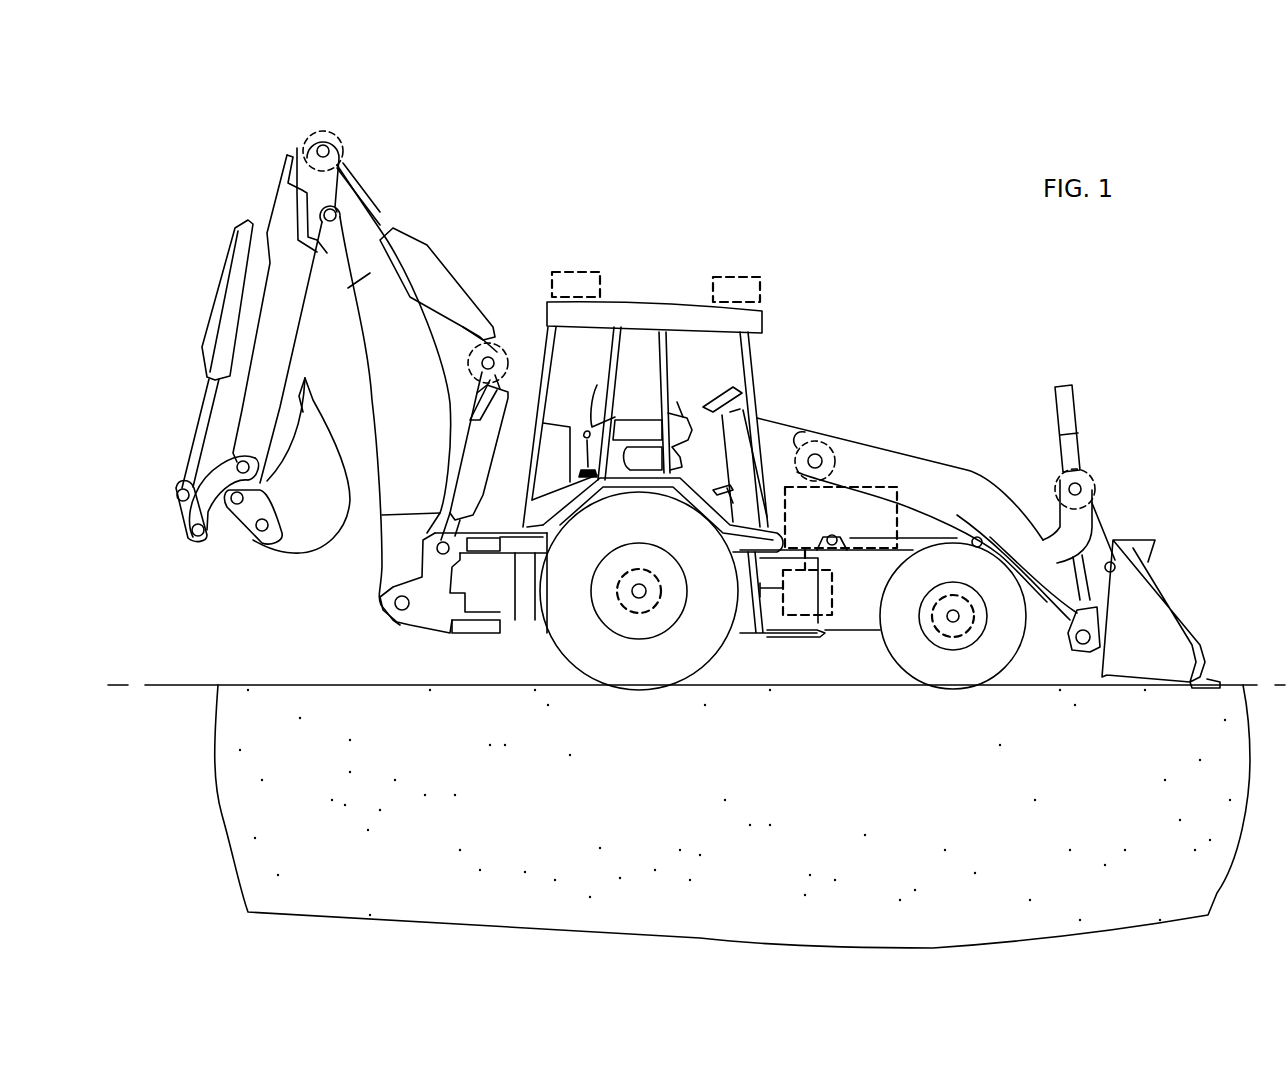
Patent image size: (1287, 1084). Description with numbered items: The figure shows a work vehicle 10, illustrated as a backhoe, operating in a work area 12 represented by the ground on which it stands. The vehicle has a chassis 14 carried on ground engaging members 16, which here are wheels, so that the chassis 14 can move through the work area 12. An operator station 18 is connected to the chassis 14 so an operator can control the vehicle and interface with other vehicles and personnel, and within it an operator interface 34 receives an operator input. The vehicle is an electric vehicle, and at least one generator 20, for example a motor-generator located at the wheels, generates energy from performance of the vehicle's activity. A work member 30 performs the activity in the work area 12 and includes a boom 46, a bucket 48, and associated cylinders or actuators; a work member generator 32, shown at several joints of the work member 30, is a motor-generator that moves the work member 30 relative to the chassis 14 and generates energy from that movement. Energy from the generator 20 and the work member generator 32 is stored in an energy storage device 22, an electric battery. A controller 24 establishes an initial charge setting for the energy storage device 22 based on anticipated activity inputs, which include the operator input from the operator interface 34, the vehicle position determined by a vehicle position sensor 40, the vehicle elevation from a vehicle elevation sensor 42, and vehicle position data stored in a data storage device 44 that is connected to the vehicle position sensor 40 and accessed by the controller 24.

The work vehicle 10 is at (238, 102).
The work area 12 is at (263, 860).
The chassis 14 is at (850, 605).
The ground engaging members 16 is at (582, 618).
The operator station 18 is at (650, 313).
The generator 20 is at (657, 613).
The energy storage device 22 is at (887, 475).
The controller 24 is at (797, 610).
The work member 30 is at (406, 320).
The work member generator 32 is at (353, 157).
The operator interface 34 is at (737, 407).
The vehicle position sensor 40 is at (750, 265).
The vehicle elevation sensor 42 is at (565, 267).
The data storage device 44 is at (773, 613).
The boom 46 is at (398, 427).
The bucket 48 is at (313, 530).